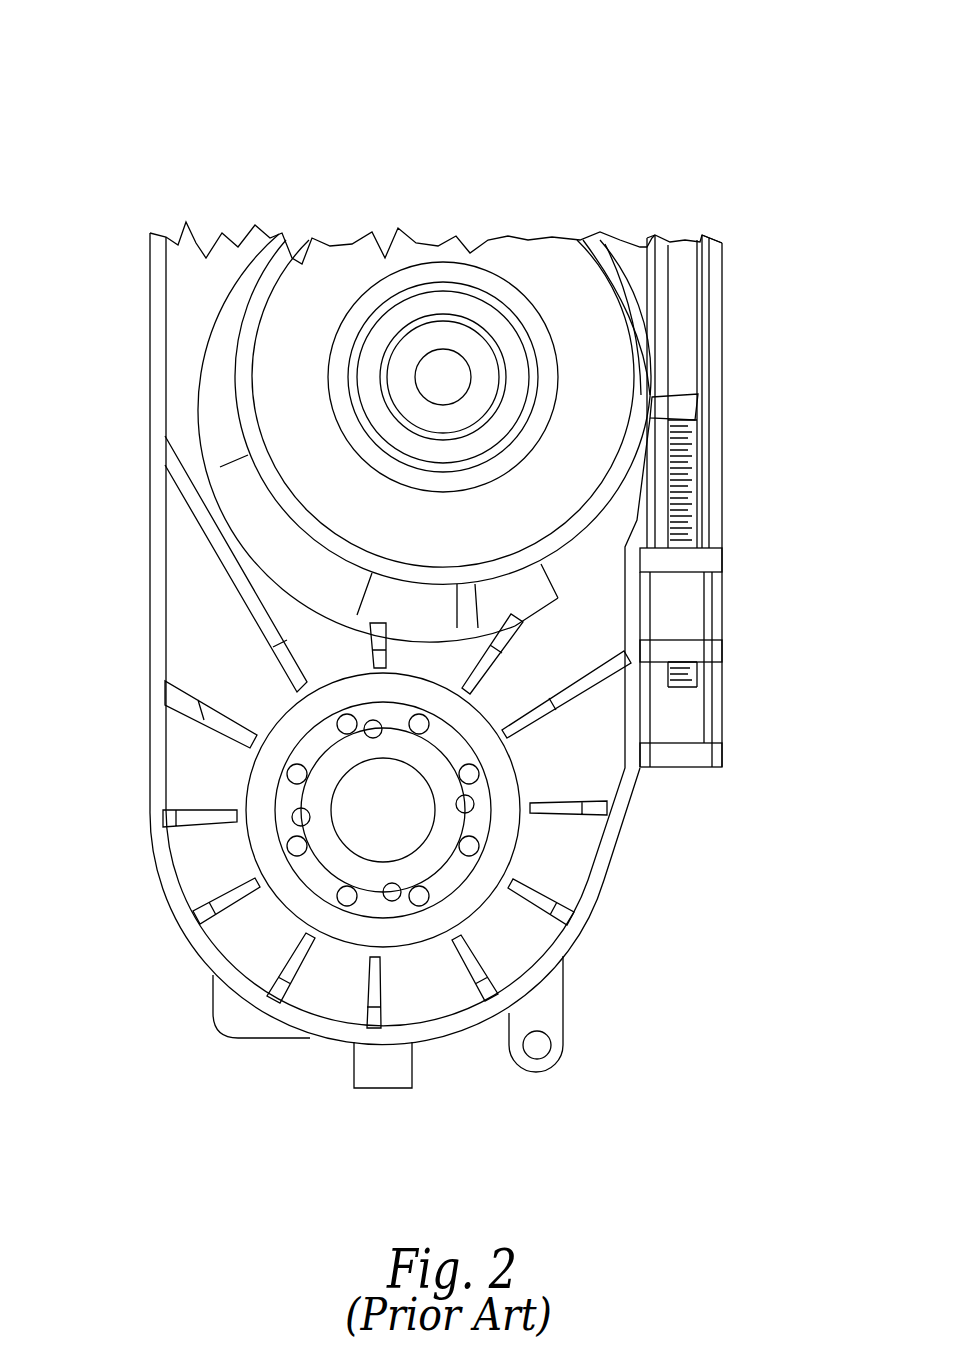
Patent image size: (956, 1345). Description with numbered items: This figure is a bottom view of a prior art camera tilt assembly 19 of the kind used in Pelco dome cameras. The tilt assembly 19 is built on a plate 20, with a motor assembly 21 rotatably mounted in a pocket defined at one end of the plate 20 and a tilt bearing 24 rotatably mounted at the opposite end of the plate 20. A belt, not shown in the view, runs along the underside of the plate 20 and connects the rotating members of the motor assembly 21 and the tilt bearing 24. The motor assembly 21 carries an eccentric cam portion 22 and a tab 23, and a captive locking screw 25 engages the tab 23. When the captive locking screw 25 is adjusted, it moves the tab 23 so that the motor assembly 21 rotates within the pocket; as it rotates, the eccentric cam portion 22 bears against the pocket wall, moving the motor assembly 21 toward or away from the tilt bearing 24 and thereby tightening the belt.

The tilt assembly 19 is at (615, 84).
The plate 20 is at (182, 334).
The motor assembly 21 is at (587, 303).
The eccentric cam portion 22 is at (248, 498).
The tab 23 is at (690, 400).
The tilt bearing 24 is at (295, 787).
The captive locking screw 25 is at (700, 494).